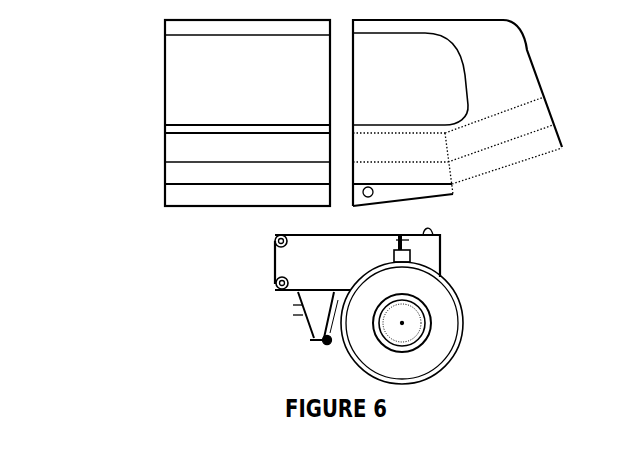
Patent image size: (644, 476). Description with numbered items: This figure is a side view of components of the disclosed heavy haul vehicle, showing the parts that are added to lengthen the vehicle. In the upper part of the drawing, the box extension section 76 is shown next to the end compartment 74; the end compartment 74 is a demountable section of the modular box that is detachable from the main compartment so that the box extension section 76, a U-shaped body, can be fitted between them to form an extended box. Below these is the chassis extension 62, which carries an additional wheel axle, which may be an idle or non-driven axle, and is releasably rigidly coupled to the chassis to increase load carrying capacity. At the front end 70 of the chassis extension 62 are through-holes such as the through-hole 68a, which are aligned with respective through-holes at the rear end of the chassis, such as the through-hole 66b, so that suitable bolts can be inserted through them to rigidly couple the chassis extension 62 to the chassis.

The box extension section 76 is at (165, 78).
The end compartment 74 is at (537, 77).
The chassis extension 62 is at (441, 243).
The front end 70 is at (253, 308).
The through-hole 68a is at (275, 242).
The through-hole 66b is at (276, 285).